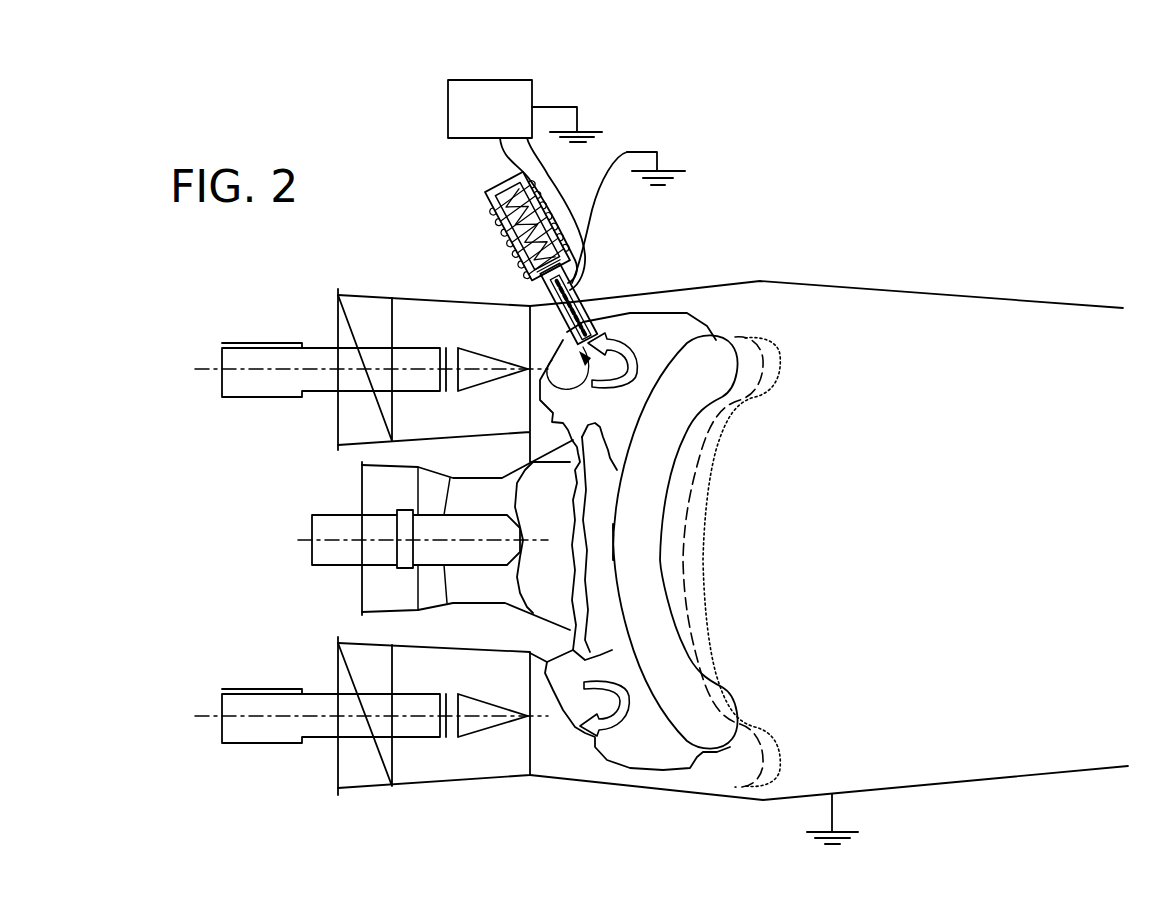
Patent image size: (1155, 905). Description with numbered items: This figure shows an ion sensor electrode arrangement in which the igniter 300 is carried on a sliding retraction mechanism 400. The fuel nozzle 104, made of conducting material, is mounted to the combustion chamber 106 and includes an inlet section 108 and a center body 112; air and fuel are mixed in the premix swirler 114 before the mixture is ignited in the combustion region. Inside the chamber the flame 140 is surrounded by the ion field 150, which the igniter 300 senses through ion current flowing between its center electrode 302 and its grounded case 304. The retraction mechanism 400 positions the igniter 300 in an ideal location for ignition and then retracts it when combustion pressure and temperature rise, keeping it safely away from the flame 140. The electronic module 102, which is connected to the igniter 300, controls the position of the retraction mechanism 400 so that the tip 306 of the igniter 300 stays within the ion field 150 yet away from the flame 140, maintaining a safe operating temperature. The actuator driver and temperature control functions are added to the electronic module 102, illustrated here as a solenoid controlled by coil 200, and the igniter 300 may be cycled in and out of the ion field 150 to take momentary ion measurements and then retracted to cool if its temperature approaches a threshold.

The electronic module 102 is at (488, 80).
The fuel nozzle 104 is at (278, 465).
The combustion chamber 106 is at (843, 755).
The inlet section 108 is at (315, 608).
The center body 112 is at (322, 518).
The premix swirler 114 is at (434, 490).
The flame 140 is at (765, 440).
The ion field 150 is at (694, 327).
The coil 200 is at (501, 257).
The igniter 300 is at (618, 280).
The center electrode 302 is at (568, 302).
The grounded case 304 is at (570, 307).
The tip 306 is at (550, 367).
The sliding retraction mechanism 400 is at (527, 225).